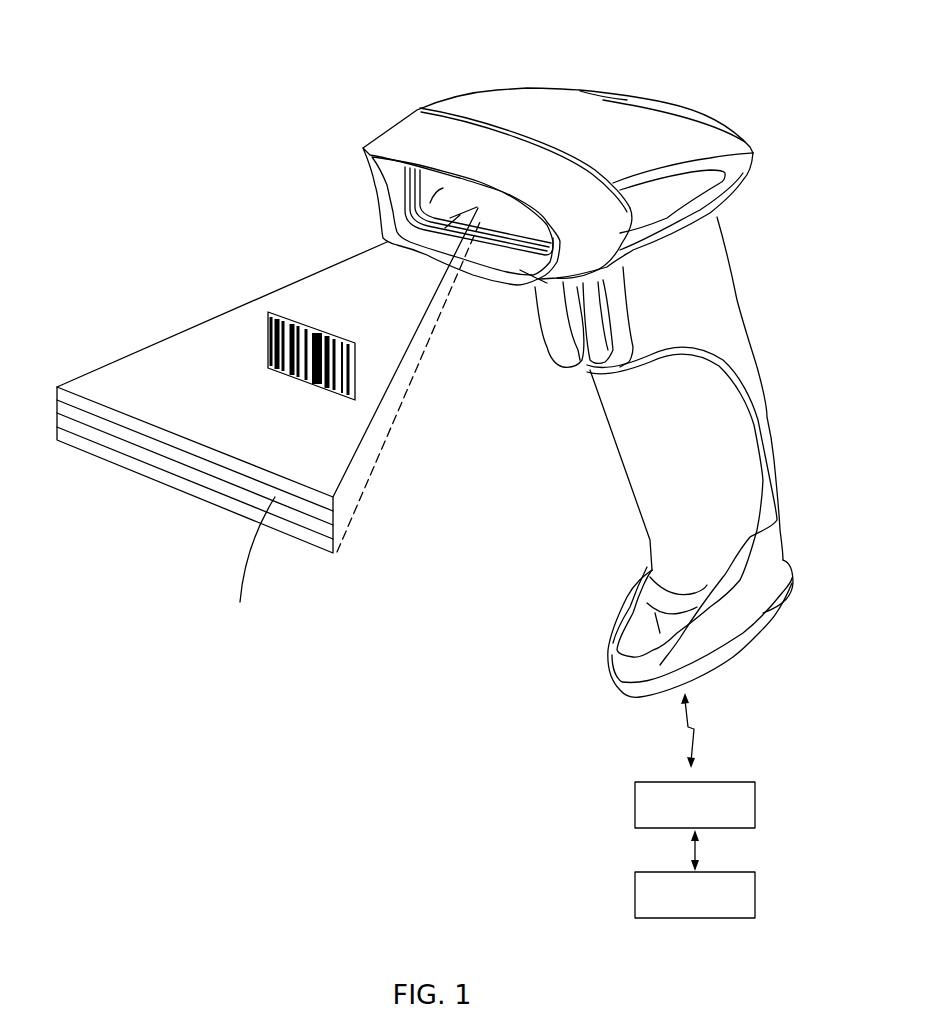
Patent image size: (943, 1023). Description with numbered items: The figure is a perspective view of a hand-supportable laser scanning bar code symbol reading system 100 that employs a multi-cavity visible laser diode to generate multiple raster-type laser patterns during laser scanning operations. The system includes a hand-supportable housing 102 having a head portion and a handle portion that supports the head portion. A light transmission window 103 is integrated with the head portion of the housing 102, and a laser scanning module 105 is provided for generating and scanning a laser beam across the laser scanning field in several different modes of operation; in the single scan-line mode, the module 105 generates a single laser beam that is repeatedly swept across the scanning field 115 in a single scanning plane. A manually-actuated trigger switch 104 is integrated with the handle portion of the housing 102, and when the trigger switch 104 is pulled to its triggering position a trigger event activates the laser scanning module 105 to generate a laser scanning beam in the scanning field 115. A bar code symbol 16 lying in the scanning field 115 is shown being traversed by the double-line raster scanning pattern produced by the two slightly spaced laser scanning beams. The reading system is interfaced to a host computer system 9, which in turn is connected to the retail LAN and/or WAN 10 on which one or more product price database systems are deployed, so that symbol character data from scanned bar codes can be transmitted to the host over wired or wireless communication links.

The laser scanning bar code symbol reading system 100 is at (752, 101).
The hand-supportable housing 102 is at (750, 430).
The light transmission window 103 is at (408, 208).
The trigger switch 104 is at (547, 333).
The laser scanning module 105 is at (580, 134).
The bar code symbol 16 is at (356, 398).
The scanning field 115 is at (140, 422).
The host computer system 9 is at (755, 808).
The LAN/WAN network 10 is at (755, 890).